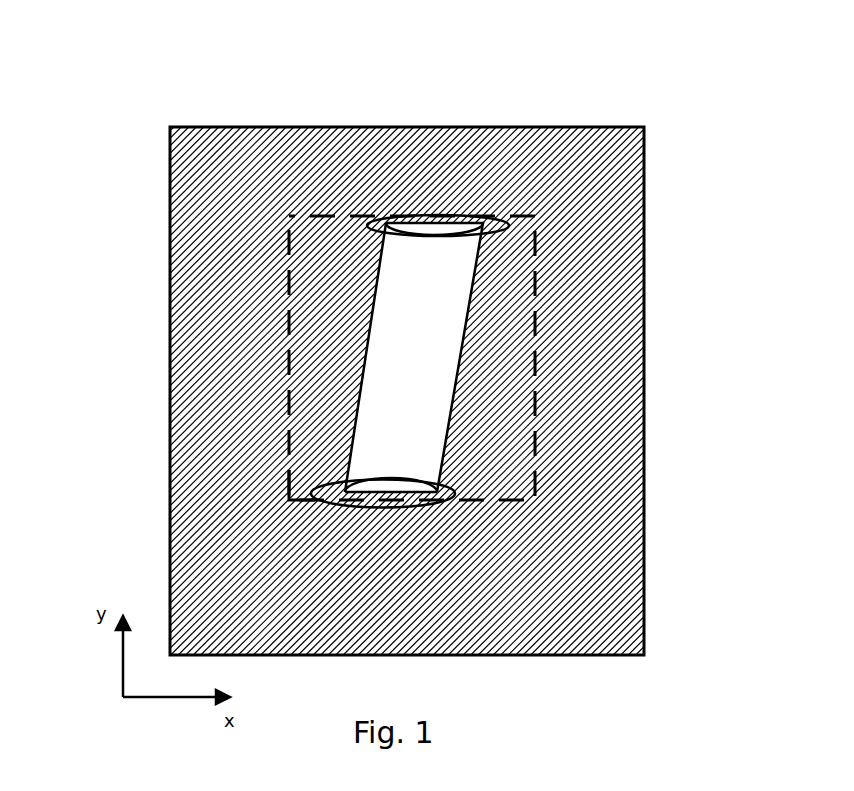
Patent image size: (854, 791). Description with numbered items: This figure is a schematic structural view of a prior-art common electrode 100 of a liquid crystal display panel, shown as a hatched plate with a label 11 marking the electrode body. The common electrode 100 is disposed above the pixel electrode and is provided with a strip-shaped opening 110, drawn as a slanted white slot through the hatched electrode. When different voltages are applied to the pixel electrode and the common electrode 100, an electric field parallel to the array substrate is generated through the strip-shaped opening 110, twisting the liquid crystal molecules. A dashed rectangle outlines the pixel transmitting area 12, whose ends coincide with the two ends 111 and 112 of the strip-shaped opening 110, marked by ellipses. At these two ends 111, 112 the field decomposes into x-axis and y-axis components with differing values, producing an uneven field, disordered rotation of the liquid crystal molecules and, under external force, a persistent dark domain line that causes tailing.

The common electrode 100 is at (602, 107).
The substrate 11 is at (644, 147).
The pixel transmitting area 12 is at (288, 483).
The strip-shaped opening 110 is at (371, 325).
The end of the strip-shaped opening 111 is at (505, 227).
The end of the strip-shaped opening 112 is at (455, 495).